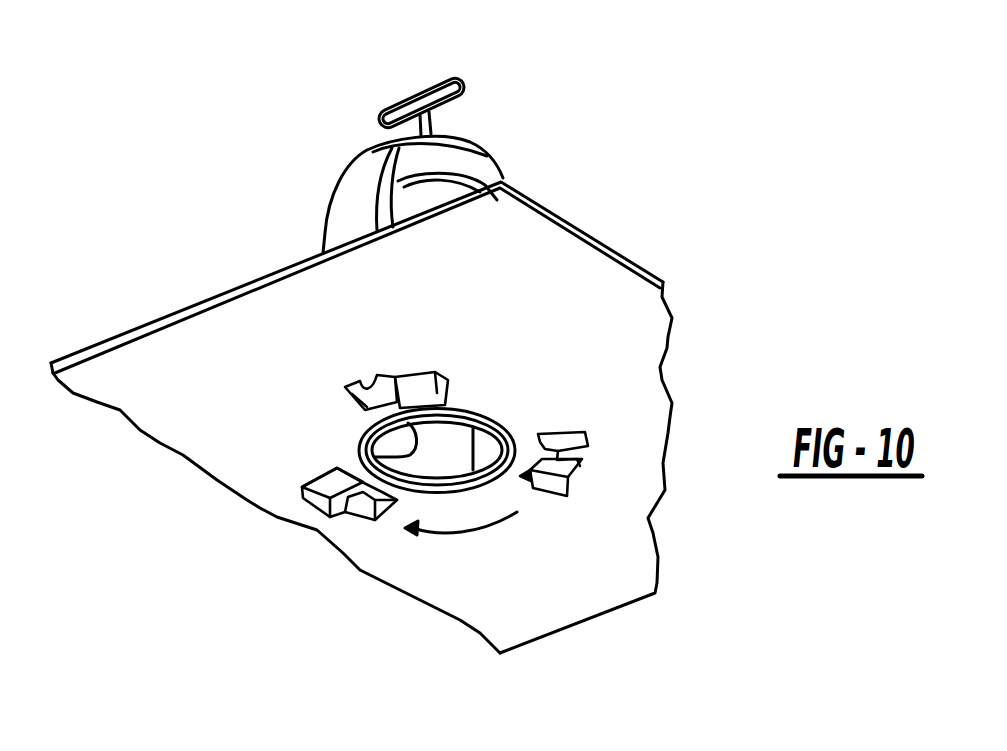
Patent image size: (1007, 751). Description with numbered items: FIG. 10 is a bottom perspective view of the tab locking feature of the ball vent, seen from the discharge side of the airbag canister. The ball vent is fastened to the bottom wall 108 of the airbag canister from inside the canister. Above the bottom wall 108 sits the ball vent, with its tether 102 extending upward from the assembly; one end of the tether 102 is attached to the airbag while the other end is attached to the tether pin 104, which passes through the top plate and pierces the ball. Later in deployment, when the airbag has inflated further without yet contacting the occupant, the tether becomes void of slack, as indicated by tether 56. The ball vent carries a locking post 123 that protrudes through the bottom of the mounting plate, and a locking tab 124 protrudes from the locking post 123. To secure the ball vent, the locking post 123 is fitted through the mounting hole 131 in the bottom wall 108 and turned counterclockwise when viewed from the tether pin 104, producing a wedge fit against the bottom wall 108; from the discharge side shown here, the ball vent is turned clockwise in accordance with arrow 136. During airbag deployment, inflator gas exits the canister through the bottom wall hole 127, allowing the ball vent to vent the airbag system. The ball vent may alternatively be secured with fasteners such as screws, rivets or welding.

The tether 56 is at (446, 142).
The tether 102 is at (422, 98).
The tether pin 104 is at (467, 88).
The bottom wall 108 is at (646, 264).
The mounting hole 131 is at (352, 384).
The bottom wall hole 127 is at (365, 452).
The locking tab 124 is at (585, 471).
The locking post 123 is at (547, 496).
The arrow 136 is at (467, 528).